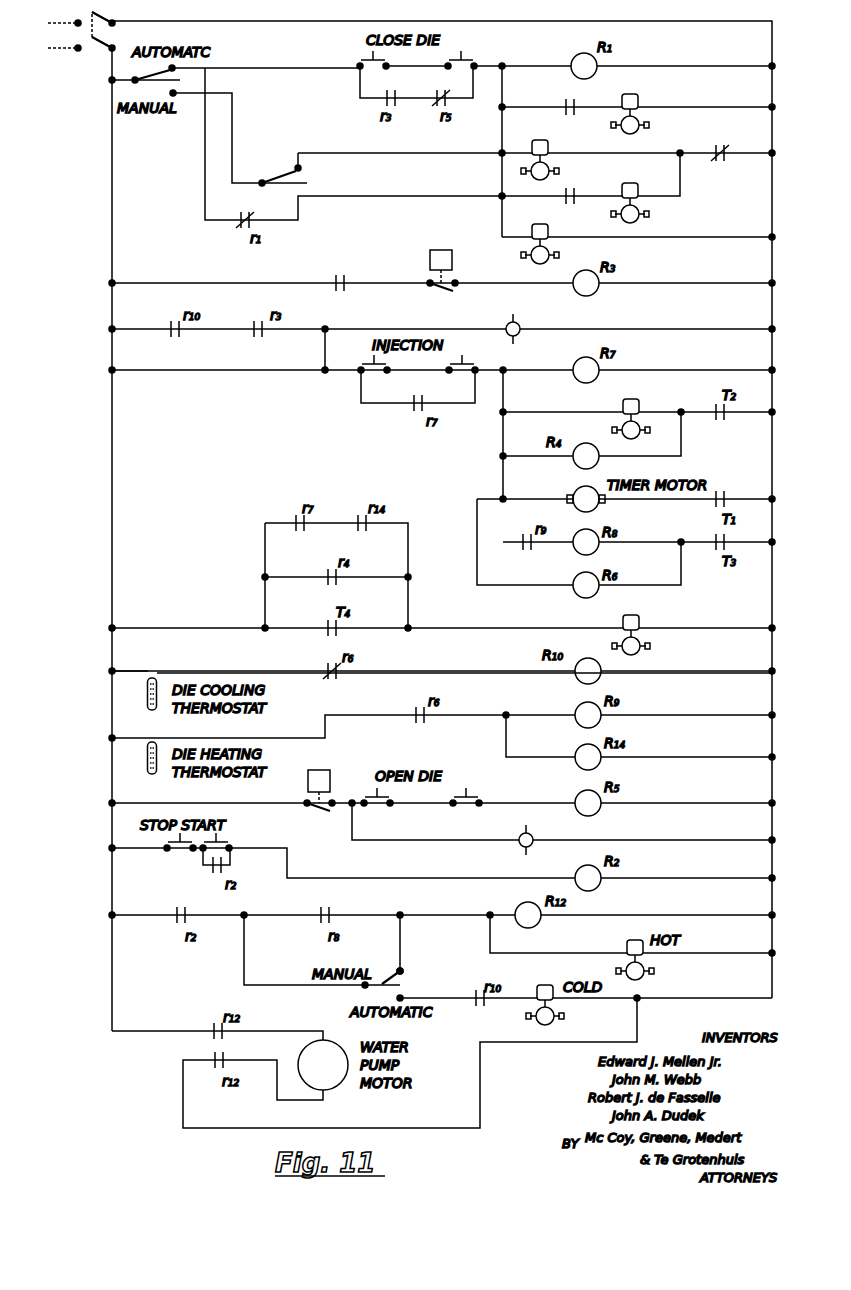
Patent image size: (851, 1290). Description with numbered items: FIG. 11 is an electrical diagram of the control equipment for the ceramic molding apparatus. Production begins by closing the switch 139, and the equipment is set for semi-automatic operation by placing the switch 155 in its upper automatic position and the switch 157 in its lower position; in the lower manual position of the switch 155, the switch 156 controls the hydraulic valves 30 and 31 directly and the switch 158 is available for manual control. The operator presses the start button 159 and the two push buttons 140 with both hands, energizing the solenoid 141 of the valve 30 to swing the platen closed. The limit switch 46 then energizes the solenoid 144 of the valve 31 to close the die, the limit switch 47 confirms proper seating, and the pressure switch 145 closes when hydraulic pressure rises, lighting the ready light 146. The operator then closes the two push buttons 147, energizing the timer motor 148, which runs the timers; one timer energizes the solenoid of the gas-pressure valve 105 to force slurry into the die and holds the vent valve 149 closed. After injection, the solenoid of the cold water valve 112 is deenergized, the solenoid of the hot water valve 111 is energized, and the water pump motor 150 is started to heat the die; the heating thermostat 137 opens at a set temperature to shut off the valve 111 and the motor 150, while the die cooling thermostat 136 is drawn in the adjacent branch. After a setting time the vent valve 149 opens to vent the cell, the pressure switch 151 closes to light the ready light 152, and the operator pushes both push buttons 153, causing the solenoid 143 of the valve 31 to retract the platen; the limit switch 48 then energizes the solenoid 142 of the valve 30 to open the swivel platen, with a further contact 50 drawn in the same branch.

The switch 139 is at (94, 44).
The switch 155 is at (140, 84).
The switch 156 is at (270, 178).
The push buttons 140 is at (360, 56).
The limit switch 46 is at (566, 98).
The solenoid 144 is at (640, 97).
The hydraulic valve 31 is at (640, 128).
The solenoid 141 is at (547, 141).
The hydraulic valve 30 is at (530, 172).
The limit switch 48 is at (575, 190).
The solenoid 142 is at (638, 184).
The limit switch contact 50 is at (725, 147).
The solenoid 143 is at (549, 235).
The pressure switch 145 is at (430, 255).
The limit switch 47 is at (342, 276).
The ready light 146 is at (519, 322).
The push buttons 147 is at (378, 374).
The gas-pressure valve 105 is at (640, 432).
The timer motor 148 is at (573, 494).
The vent valve 149 is at (642, 645).
The die cooling thermostat 136 is at (157, 705).
The heating thermostat 137 is at (157, 770).
The pressure switch 151 is at (330, 777).
The push buttons 153 is at (382, 806).
The ready light 152 is at (518, 846).
The switch 158 is at (170, 853).
The start button 159 is at (232, 840).
The switch 157 is at (405, 976).
The hot water valve 111 is at (645, 972).
The cold water valve 112 is at (558, 1018).
The water pump motor 150 is at (323, 1065).